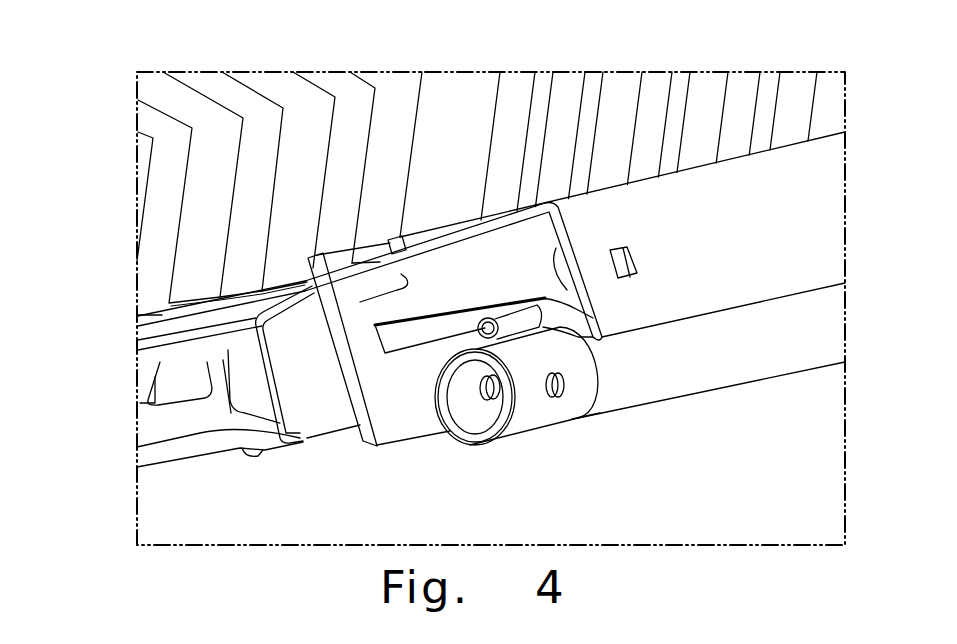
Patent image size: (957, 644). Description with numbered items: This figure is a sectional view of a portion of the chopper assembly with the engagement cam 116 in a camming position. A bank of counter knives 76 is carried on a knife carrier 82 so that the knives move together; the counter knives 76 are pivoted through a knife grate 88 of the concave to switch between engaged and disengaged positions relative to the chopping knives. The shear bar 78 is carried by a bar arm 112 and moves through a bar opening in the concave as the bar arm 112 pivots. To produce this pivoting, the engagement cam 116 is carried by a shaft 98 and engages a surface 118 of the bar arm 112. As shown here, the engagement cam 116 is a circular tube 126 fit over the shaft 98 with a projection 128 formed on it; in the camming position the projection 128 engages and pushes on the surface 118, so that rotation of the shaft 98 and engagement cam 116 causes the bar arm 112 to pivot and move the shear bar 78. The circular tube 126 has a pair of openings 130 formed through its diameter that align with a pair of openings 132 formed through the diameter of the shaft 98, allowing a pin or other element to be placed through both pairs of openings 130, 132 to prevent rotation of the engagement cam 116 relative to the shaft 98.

The counter knives 76 is at (350, 90).
The shear bar 78 is at (366, 438).
The knife carrier 82 is at (172, 442).
The knife grate 88 is at (157, 322).
The shaft 98 is at (676, 396).
The bar arm 112 is at (524, 277).
The engagement cam 116 is at (585, 417).
The surface 118 is at (431, 356).
The circular tube 126 is at (520, 432).
The projection 128 is at (486, 318).
The openings 130 is at (555, 368).
The openings 132 is at (487, 396).